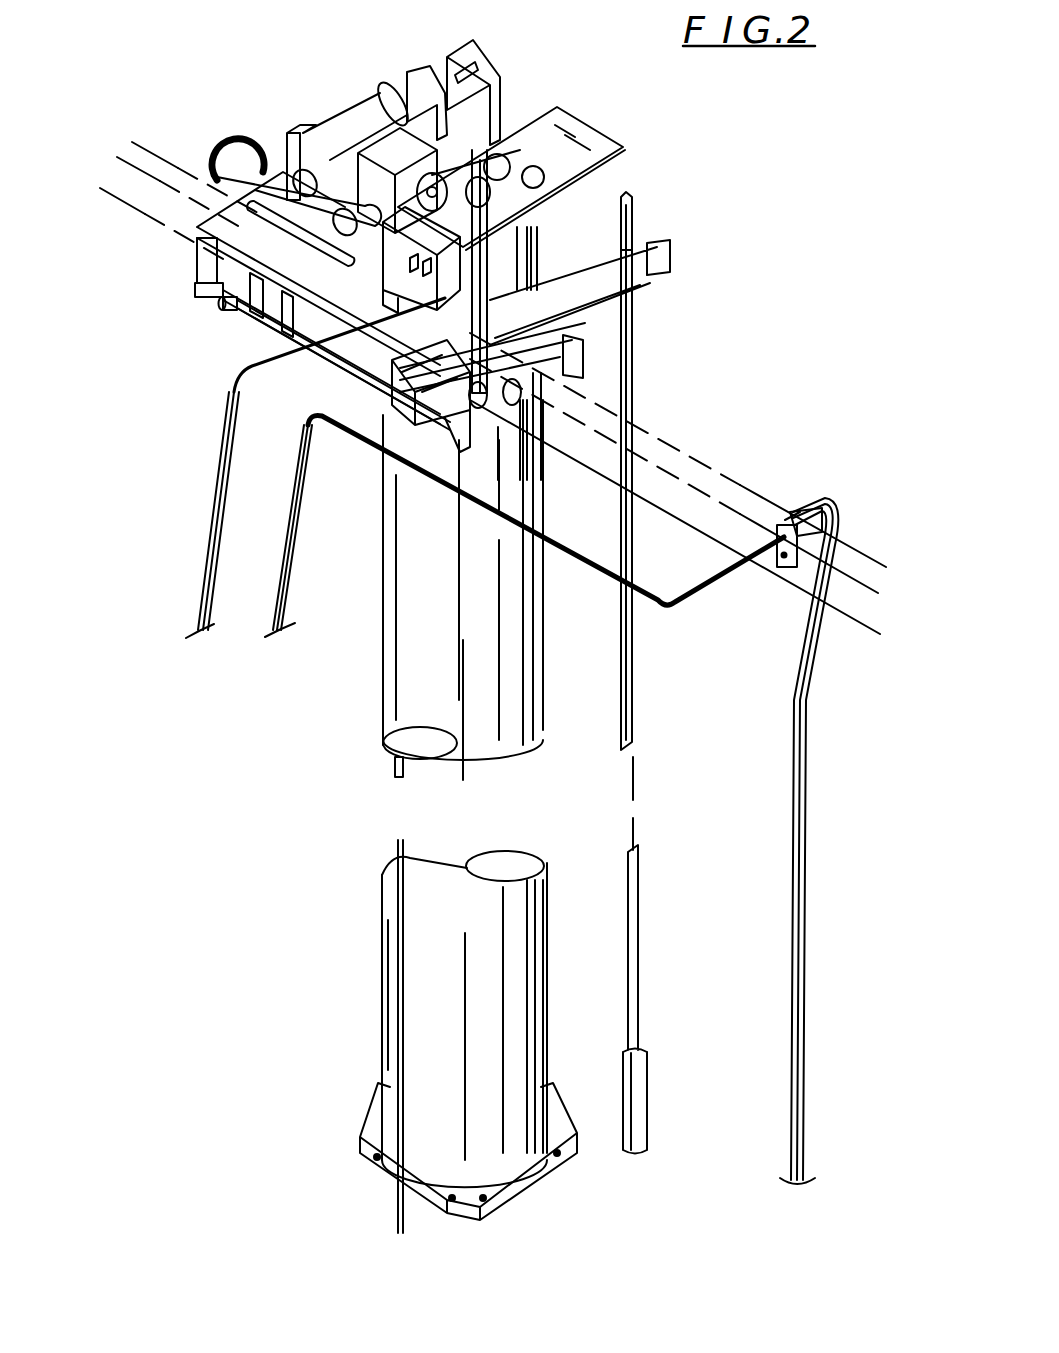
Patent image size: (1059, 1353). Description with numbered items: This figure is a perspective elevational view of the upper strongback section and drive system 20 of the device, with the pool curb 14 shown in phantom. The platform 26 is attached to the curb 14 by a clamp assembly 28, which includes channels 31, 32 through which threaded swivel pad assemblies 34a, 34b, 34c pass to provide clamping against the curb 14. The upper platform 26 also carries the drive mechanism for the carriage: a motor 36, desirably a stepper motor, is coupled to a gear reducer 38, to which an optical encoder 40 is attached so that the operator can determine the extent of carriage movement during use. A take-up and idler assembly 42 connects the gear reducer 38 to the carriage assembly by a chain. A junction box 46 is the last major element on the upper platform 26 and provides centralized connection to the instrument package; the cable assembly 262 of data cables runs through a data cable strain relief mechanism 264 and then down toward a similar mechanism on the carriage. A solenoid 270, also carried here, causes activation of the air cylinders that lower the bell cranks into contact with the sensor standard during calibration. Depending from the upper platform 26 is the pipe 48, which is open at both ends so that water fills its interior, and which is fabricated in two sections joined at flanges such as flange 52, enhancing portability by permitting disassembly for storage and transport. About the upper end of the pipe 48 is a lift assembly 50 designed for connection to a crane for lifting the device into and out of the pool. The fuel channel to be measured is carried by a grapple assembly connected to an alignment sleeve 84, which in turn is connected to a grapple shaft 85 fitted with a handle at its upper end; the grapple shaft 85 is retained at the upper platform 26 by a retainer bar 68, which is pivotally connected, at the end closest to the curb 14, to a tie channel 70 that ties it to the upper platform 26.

The curb 14 is at (150, 158).
The upper strongback section and drive system 20 is at (672, 375).
The platform 26 is at (190, 270).
The clamp assembly 28 is at (201, 361).
The channel 31 is at (318, 392).
The channel 32 is at (567, 363).
The threaded swivel pad assembly 34a is at (223, 303).
The threaded swivel pad assembly 34b is at (423, 447).
The threaded swivel pad assembly 34c is at (527, 395).
The motor 36 is at (350, 115).
The gear reducer 38 is at (390, 97).
The optical encoder 40 is at (320, 243).
The take-up and idler assembly 42 is at (513, 147).
The junction box 46 is at (517, 273).
The pipe 48 is at (380, 697).
The lift assembly 50 is at (498, 47).
The flange 52 is at (375, 1167).
The retainer bar 68 is at (653, 273).
The tie channel 70 is at (636, 230).
The alignment sleeve 84 is at (650, 1083).
The grapple shaft 85 is at (640, 690).
The cable assembly 262 is at (805, 867).
The data cable strain relief mechanism 264 is at (805, 507).
The solenoid 270 is at (367, 293).